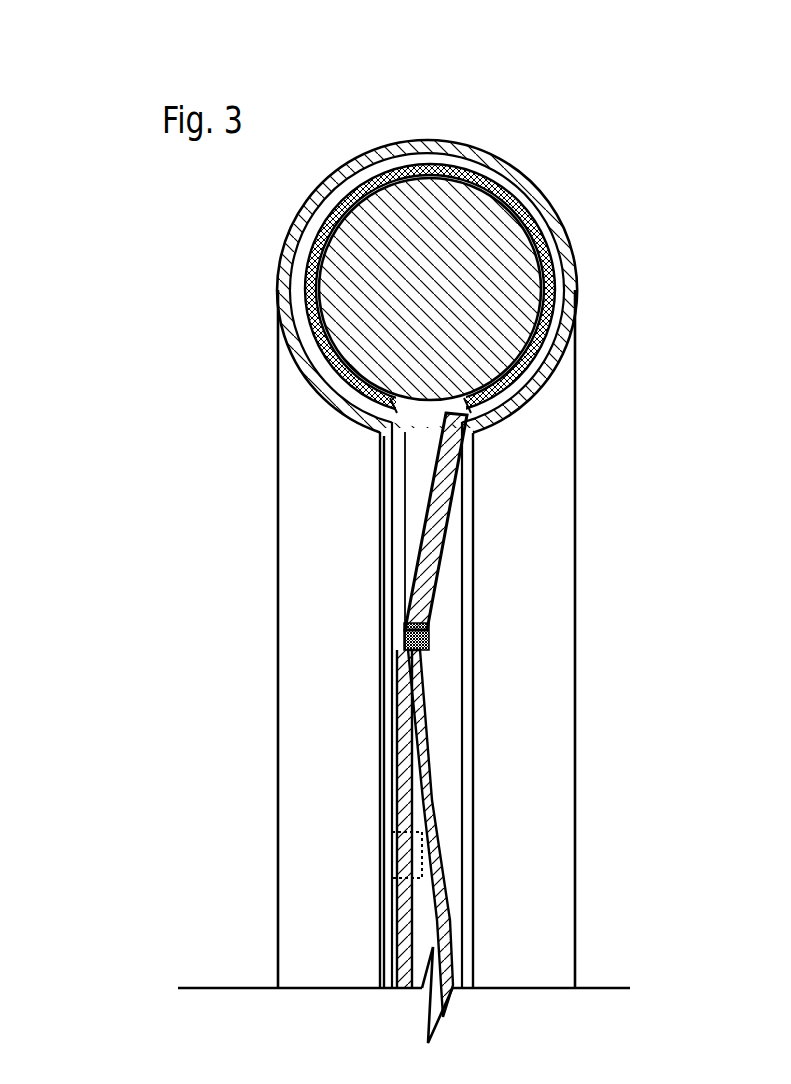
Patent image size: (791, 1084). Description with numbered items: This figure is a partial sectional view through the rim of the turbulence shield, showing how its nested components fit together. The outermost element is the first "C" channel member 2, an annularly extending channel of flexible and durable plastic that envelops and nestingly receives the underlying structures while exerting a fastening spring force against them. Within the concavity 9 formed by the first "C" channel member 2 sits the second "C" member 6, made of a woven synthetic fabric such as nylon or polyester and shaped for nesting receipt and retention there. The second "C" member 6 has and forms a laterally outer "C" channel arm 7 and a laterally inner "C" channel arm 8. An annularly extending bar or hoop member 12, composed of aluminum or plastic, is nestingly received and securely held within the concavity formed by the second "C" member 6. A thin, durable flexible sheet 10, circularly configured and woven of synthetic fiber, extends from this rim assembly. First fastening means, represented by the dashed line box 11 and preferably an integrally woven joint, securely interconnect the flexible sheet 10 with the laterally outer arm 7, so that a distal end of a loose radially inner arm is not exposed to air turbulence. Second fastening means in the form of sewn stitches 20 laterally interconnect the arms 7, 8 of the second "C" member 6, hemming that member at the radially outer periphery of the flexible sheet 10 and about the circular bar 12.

The first "C" channel member 2 is at (493, 162).
The second "C" member 6 is at (305, 288).
The bar or hoop member 12 is at (465, 250).
The concavity 9 is at (423, 415).
The laterally outer "C" channel arm 7 is at (405, 695).
The laterally inner "C" channel arm 8 is at (440, 527).
The sewn stitches 20 is at (420, 640).
The dashed line box 11 is at (405, 853).
The flexible sheet 10 is at (405, 957).